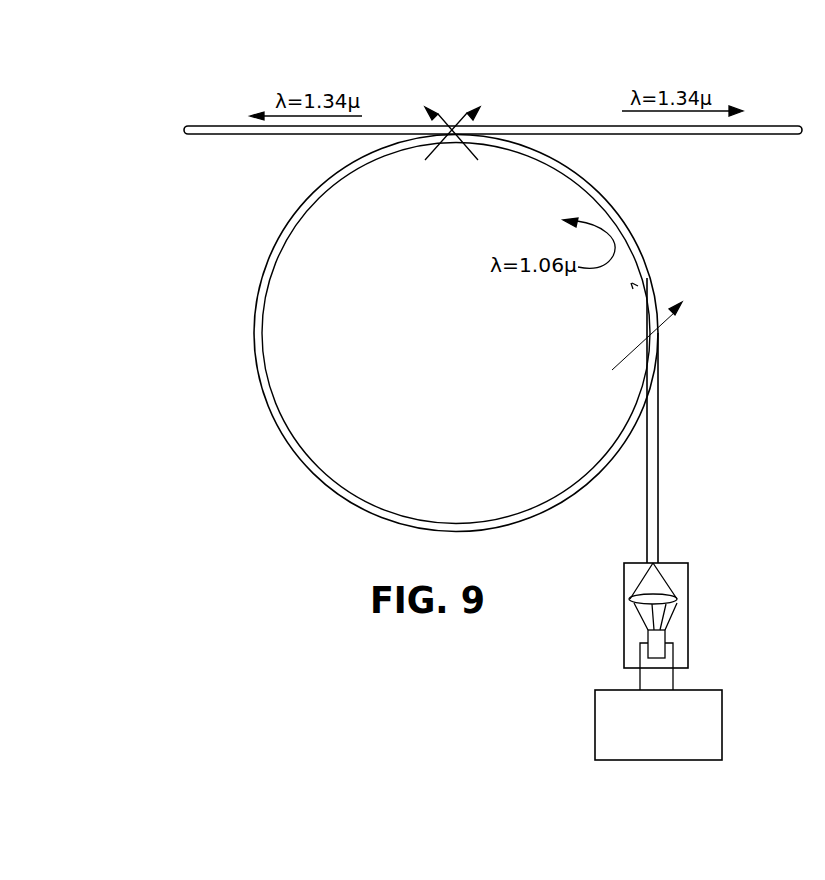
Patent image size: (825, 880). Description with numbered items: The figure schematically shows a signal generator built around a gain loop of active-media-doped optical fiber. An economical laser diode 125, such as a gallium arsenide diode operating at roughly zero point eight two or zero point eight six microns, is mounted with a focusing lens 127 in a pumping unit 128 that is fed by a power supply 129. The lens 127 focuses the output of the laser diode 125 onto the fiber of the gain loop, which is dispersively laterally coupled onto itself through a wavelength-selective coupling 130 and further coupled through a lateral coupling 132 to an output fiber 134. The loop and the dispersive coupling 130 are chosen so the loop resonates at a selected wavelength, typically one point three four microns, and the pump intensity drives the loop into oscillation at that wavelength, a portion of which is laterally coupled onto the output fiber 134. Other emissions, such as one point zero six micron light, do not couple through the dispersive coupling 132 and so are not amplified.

The output fiber 134 is at (541, 127).
The lateral coupling 132 is at (448, 112).
The coupling 130 is at (660, 272).
The pumping unit 128 is at (623, 624).
The focusing lens 127 is at (667, 603).
The laser diode 125 is at (666, 636).
The power supply 129 is at (727, 722).